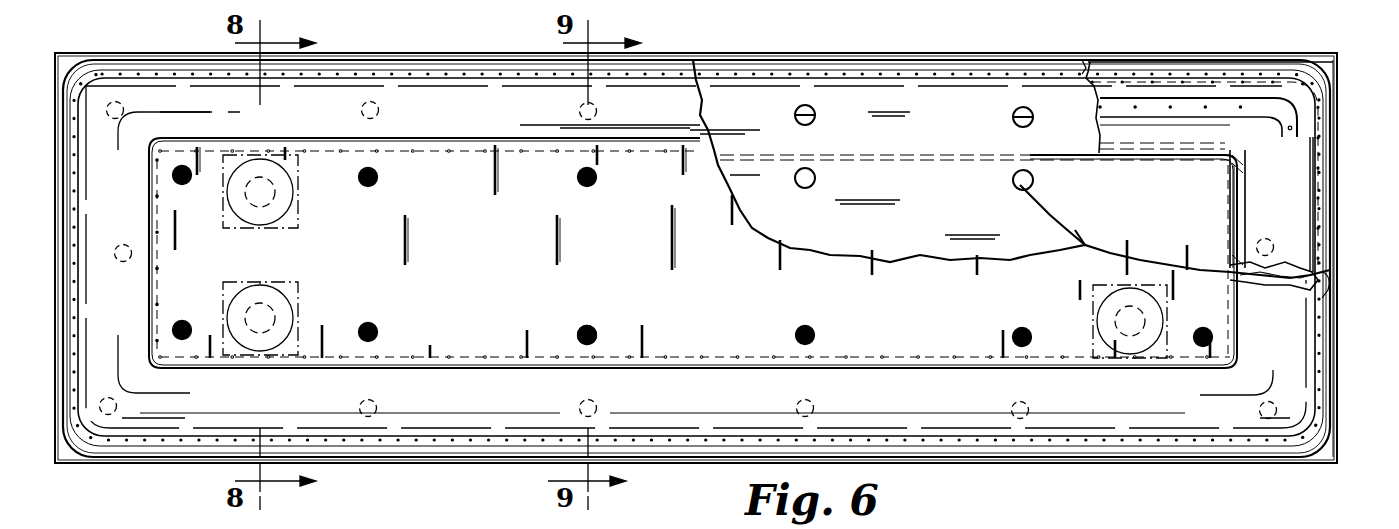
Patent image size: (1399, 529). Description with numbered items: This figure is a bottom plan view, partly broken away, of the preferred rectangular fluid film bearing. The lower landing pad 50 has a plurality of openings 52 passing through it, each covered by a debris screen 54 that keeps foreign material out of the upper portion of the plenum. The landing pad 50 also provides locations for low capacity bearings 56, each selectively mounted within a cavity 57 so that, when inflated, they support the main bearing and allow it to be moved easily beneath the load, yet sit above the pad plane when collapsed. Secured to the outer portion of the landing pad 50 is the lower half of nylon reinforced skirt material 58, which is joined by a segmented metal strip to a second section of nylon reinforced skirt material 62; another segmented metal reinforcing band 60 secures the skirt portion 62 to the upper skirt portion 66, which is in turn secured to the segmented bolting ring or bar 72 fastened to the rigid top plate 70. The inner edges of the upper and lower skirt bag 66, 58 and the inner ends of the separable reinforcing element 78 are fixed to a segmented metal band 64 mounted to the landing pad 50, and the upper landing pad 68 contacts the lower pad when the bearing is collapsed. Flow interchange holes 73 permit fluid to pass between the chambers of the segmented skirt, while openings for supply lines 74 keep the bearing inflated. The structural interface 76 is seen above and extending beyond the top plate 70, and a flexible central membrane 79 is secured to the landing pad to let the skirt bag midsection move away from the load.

The lower landing pad 50 is at (722, 277).
The openings 52 is at (597, 183).
The debris screen 54 is at (578, 327).
The low capacity bearings 56 is at (296, 192).
The cavity 57 is at (298, 282).
The lower half of nylon reinforced skirt material 58 is at (694, 416).
The segmented metal reinforcing band 60 is at (1335, 152).
The second section of nylon reinforced skirt material 62 is at (1080, 60).
The segmented metal band 64 is at (1240, 178).
The upper skirt portion 66 is at (1118, 127).
The upper landing pad 68 is at (1174, 226).
The rigid top plate 70 is at (1284, 217).
The segmented bolting ring or bar 72 is at (1205, 118).
The flow interchange holes 73 is at (815, 110).
The openings for supply lines 74 is at (124, 244).
The structural interface 76 is at (1326, 180).
The separable reinforcing element 78 is at (1110, 120).
The central membrane 79 is at (1080, 230).